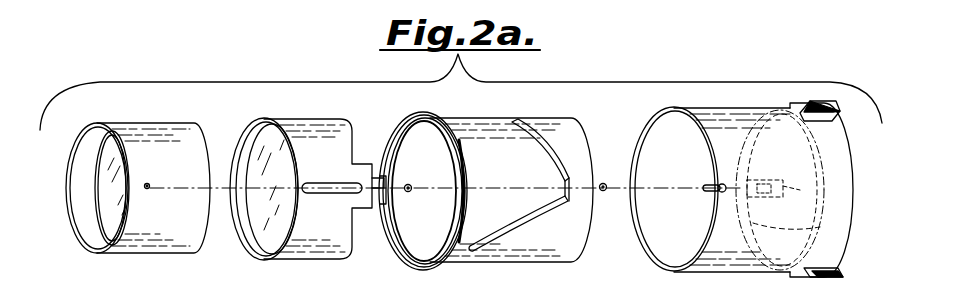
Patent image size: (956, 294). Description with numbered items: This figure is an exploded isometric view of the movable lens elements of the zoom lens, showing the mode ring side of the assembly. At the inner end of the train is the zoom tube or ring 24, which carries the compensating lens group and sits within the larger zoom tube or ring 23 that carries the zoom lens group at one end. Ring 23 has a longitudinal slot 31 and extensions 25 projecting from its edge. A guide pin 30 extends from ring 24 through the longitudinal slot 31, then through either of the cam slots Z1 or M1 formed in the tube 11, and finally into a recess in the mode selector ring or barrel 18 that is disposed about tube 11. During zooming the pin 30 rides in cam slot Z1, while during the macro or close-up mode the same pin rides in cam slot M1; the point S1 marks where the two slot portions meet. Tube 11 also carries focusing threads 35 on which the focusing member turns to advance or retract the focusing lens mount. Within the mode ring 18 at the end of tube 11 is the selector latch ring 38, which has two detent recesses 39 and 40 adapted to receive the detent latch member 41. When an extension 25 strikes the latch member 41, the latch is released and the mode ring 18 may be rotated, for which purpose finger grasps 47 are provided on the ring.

The zoom tube or ring 24 is at (149, 140).
The zoom tube or ring 23 is at (297, 135).
The extensions 25 is at (368, 165).
The longitudinal slot 31 is at (345, 187).
The tube 11 is at (502, 180).
The focusing threads 35 is at (461, 188).
The cam slot Z1 is at (522, 143).
The cam slot vertex S1 is at (563, 188).
The cam slot M1 is at (553, 210).
The mode selector ring or barrel 18 is at (724, 124).
The guide pin 30 is at (720, 184).
The detent recess 39 is at (753, 180).
The selector latch ring 38 is at (827, 181).
The detent latch member 41 is at (788, 190).
The detent recess 40 is at (804, 228).
The finger grasps 47 is at (830, 112).